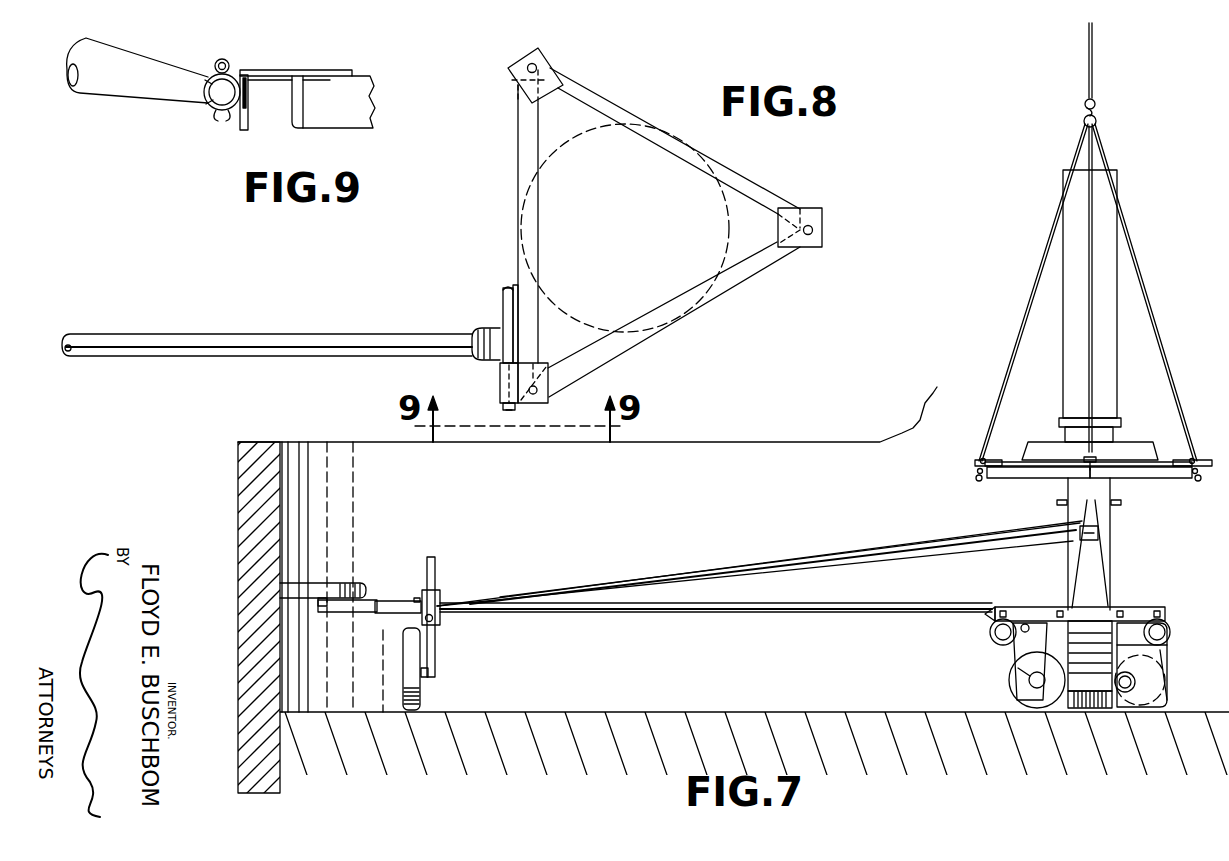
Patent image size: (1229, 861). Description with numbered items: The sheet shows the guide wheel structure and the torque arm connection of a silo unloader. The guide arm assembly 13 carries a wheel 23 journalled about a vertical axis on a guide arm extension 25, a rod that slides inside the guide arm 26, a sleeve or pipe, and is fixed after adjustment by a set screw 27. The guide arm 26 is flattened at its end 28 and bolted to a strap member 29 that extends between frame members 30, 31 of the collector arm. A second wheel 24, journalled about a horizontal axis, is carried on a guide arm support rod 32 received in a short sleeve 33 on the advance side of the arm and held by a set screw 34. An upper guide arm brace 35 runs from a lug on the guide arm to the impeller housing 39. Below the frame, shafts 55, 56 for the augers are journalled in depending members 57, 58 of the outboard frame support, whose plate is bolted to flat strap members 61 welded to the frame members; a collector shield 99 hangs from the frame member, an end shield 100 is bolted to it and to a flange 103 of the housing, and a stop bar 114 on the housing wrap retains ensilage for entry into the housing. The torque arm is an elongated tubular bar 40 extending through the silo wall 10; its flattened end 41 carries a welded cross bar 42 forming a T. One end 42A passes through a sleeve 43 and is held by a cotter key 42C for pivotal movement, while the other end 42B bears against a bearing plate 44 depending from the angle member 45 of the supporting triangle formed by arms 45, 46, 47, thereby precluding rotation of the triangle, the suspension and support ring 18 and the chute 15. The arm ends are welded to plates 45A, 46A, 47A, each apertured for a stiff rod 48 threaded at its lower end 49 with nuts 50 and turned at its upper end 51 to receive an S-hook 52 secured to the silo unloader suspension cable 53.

In FIG. 7, the silo wall 10 is at (238, 489).
In FIG. 7, the guide arm assembly 13 is at (667, 570).
In FIG. 7, the chute 15 is at (1121, 289).
In FIG. 8, the suspension and support ring 18 is at (676, 132).
In FIG. 7, the suspension and support ring 18 is at (1156, 444).
In FIG. 7, the wheel 23 is at (356, 583).
In FIG. 7, the wheel 24 is at (421, 698).
In FIG. 7, the guide arm extension 25 is at (345, 613).
In FIG. 7, the guide arm 26 is at (671, 614).
In FIG. 7, the set screw 27 is at (388, 600).
In FIG. 7, the flattened end 28 is at (987, 607).
In FIG. 7, the strap member 29 is at (1141, 607).
In FIG. 7, the frame member 30 is at (999, 645).
In FIG. 7, the frame member 31 is at (1171, 633).
In FIG. 7, the guide arm support rod 32 is at (436, 640).
In FIG. 7, the short sleeve 33 is at (441, 594).
In FIG. 7, the set screw 34 is at (424, 619).
In FIG. 7, the upper guide arm brace 35 is at (880, 549).
In FIG. 7, the impeller housing 39 is at (1112, 533).
In FIG. 9, the bar 40 is at (100, 84).
In FIG. 8, the bar 40 is at (253, 340).
In FIG. 8, the flattened end 41 is at (478, 329).
In FIG. 9, the bar 42 is at (214, 96).
In FIG. 8, the bar 42 is at (503, 300).
In FIG. 8, the end 42A is at (506, 410).
In FIG. 8, the end 42B is at (505, 288).
In FIG. 9, the cotter key 42C is at (222, 59).
In FIG. 8, the cotter key 42C is at (515, 409).
In FIG. 9, the sleeve 43 is at (205, 78).
In FIG. 8, the sleeve 43 is at (500, 383).
In FIG. 9, the bearing plate 44 is at (245, 131).
In FIG. 8, the bearing plate 44 is at (518, 300).
In FIG. 9, the angle member 45 is at (292, 113).
In FIG. 8, the angle member 45 is at (518, 166).
In FIG. 9, the plate 45A is at (289, 70).
In FIG. 8, the plate 45A is at (546, 364).
In FIG. 7, the plate 45A is at (980, 462).
In FIG. 8, the arm 46 is at (748, 178).
In FIG. 7, the arm 46 is at (1162, 479).
In FIG. 8, the plate 46A is at (547, 58).
In FIG. 7, the plate 46A is at (1210, 462).
In FIG. 9, the arm 47 is at (364, 76).
In FIG. 8, the arm 47 is at (745, 278).
In FIG. 7, the arm 47 is at (1010, 479).
In FIG. 8, the plate 47A is at (822, 219).
In FIG. 7, the plate 47A is at (1085, 456).
In FIG. 7, the stiff rod 48 is at (1027, 313).
In FIG. 7, the lower end 49 is at (976, 479).
In FIG. 7, the nuts 50 is at (982, 459).
In FIG. 7, the upper end 51 is at (1097, 126).
In FIG. 7, the S-hook 52 is at (1097, 110).
In FIG. 7, the silo unloader suspension cable 53 is at (1094, 60).
In FIG. 7, the shaft 55 is at (1136, 685).
In FIG. 7, the shaft 56 is at (1029, 684).
In FIG. 7, the depending member 57 is at (1015, 656).
In FIG. 7, the depending member 58 is at (1152, 644).
In FIG. 7, the flat strap members 61 is at (1023, 623).
In FIG. 7, the collector shield 99 is at (1168, 677).
In FIG. 7, the end shield 100 is at (1168, 648).
In FIG. 7, the flange 103 is at (1122, 640).
In FIG. 7, the stop bar 114 is at (1088, 709).